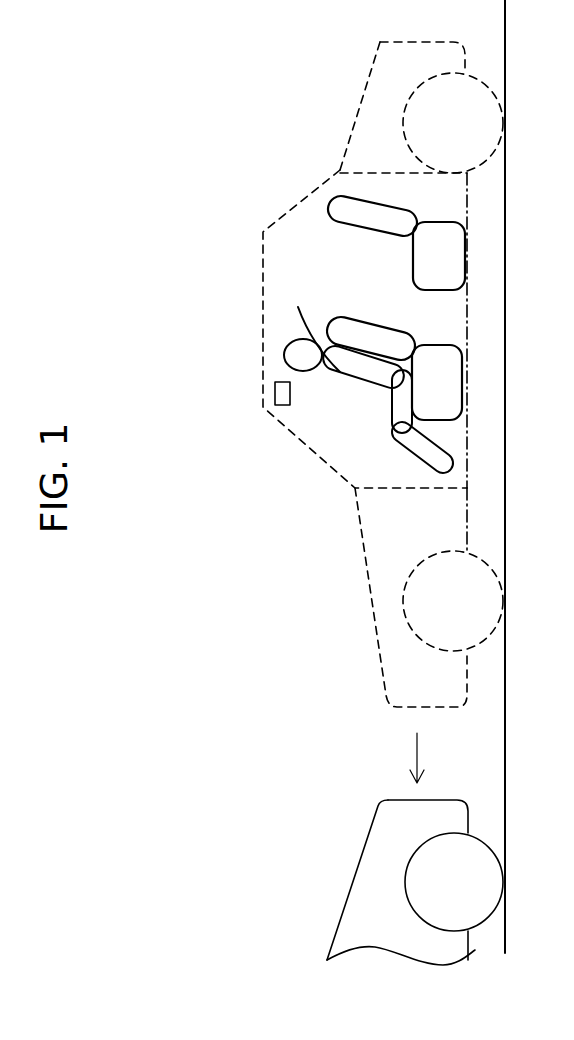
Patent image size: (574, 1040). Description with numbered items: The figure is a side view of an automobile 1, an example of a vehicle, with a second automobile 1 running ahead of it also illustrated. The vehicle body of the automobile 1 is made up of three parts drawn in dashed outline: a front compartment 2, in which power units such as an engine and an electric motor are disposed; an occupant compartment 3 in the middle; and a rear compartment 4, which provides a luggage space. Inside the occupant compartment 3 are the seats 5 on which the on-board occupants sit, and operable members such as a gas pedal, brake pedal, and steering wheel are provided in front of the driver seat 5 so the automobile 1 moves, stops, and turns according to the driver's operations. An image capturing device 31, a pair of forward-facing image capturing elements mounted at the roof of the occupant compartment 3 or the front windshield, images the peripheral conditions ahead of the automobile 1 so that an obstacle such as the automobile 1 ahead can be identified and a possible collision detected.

The automobile 1 is at (258, 505).
The front compartment 2 is at (373, 593).
The occupant compartment 3 is at (270, 280).
The rear compartment 4 is at (357, 127).
The seat 5 is at (450, 252).
The image capturing device 31 is at (283, 396).